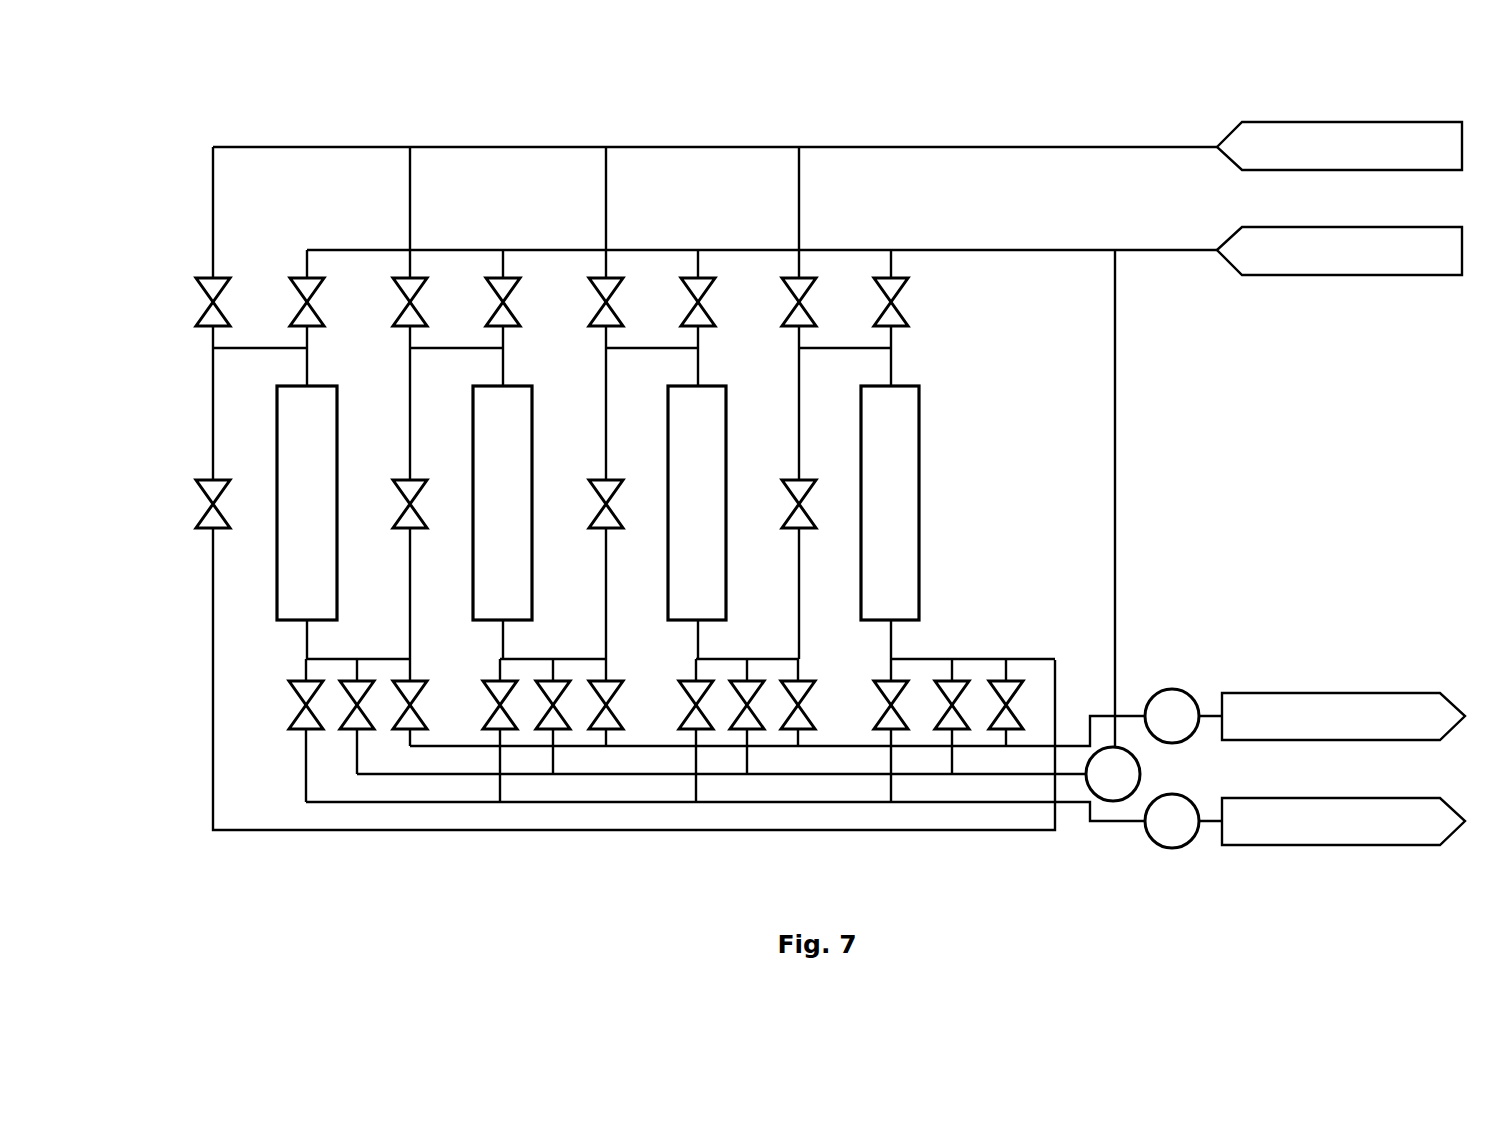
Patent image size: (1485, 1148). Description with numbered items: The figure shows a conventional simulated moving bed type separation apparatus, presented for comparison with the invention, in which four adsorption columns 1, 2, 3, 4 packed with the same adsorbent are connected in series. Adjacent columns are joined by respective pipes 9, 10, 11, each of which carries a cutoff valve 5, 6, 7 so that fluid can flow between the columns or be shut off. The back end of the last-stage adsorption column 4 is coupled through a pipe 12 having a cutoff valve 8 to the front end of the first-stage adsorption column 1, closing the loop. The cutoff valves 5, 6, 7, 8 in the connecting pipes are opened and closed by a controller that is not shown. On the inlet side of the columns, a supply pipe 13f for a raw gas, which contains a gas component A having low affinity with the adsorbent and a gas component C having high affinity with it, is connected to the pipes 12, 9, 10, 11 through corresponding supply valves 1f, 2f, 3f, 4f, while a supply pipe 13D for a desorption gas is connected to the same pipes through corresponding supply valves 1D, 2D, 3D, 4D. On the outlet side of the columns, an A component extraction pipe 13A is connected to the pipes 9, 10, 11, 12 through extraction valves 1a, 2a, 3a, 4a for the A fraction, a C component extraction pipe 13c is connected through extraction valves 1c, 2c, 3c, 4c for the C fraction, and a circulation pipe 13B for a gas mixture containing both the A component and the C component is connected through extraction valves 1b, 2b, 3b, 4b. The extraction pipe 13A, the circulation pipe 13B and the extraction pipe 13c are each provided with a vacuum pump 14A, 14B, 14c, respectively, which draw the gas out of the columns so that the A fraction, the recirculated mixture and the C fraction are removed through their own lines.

The adsorption column 1 is at (307, 503).
The adsorption column 2 is at (502, 503).
The adsorption column 3 is at (697, 503).
The adsorption column 4 is at (890, 503).
The extraction valve for A fraction 1a is at (290, 695).
The extraction valve 1b is at (347, 718).
The extraction valve for C fraction 1c is at (400, 718).
The extraction valve for A fraction 2a is at (500, 706).
The extraction valve 2b is at (553, 706).
The extraction valve for C fraction 2c is at (606, 706).
The extraction valve for A fraction 3a is at (696, 706).
The extraction valve 3b is at (747, 706).
The extraction valve for C fraction 3c is at (798, 706).
The extraction valve for A fraction 4a is at (891, 706).
The extraction valve 4b is at (952, 706).
The extraction valve for C fraction 4c is at (1006, 706).
The supply valve 1D is at (197, 292).
The supply valve 2D is at (397, 326).
The supply valve 3D is at (591, 326).
The supply valve 4D is at (784, 326).
The supply valve 1f is at (322, 302).
The supply valve 2f is at (517, 302).
The supply valve 3f is at (712, 302).
The supply valve 4f is at (905, 302).
The cutoff valve 5 is at (424, 481).
The cutoff valve 6 is at (620, 481).
The cutoff valve 7 is at (814, 481).
The cutoff valve 8 is at (228, 481).
The pipe 9 is at (447, 348).
The pipe 10 is at (642, 348).
The pipe 11 is at (835, 348).
The pipe 12 is at (246, 348).
The supply pipe for desorption gas 13D is at (1030, 147).
The supply pipe for raw gas 13f is at (1030, 250).
The A component extraction pipe 13A is at (1122, 822).
The circulation pipe 13B is at (1117, 480).
The C component extraction pipe 13c is at (1130, 716).
The vacuum pump 14A is at (1172, 848).
The vacuum pump 14B is at (1141, 774).
The vacuum pump 14c is at (1193, 697).